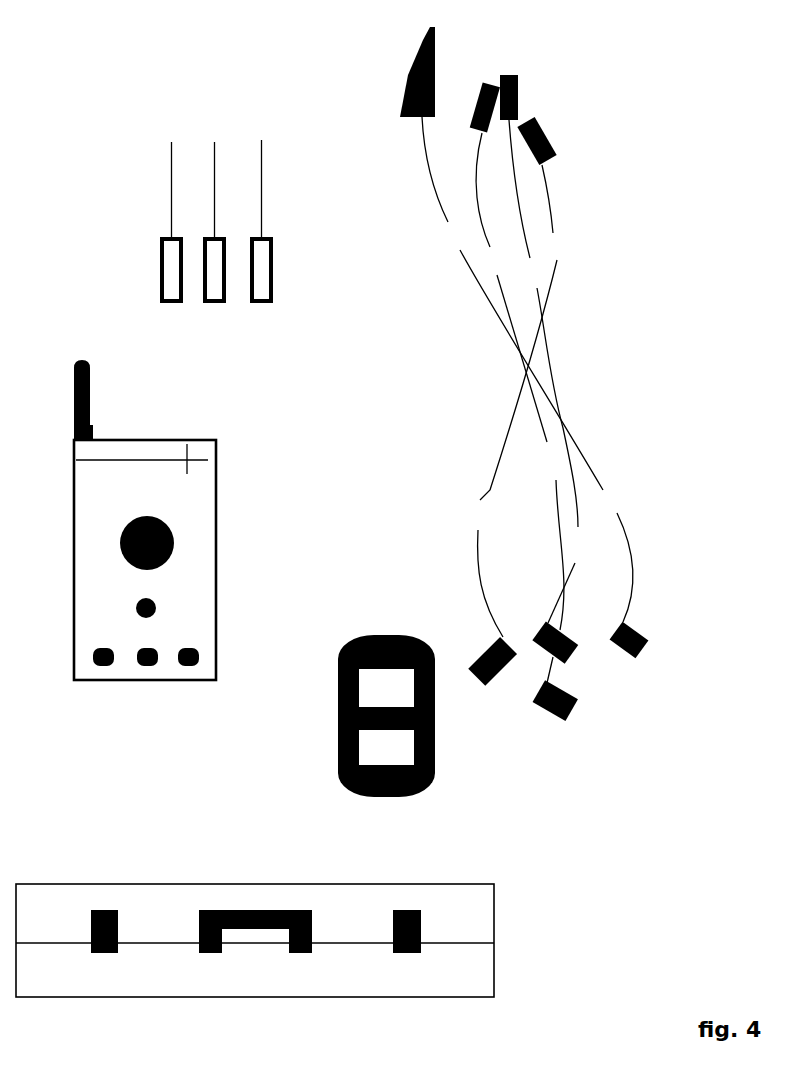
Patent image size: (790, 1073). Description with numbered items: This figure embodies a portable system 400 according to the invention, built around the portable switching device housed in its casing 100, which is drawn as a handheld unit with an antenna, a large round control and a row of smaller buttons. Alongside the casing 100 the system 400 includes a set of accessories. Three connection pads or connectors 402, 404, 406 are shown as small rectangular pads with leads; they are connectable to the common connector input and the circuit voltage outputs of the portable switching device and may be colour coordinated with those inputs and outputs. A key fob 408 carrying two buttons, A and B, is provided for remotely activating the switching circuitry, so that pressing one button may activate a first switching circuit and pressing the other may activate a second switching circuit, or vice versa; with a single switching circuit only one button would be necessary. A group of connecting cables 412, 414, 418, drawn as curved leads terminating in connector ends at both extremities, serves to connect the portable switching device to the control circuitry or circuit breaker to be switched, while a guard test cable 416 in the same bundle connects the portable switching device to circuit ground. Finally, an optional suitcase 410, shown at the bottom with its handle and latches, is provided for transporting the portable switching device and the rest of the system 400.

The portable system 400 is at (134, 190).
The connection pad or connector 402 is at (151, 221).
The connection pad or connector 404 is at (199, 221).
The connection pad or connector 406 is at (249, 220).
The casing 100 is at (205, 438).
The key fob 408 is at (354, 634).
The suitcase 410 is at (465, 884).
The connecting cable 412 is at (518, 401).
The connecting cable 414 is at (524, 372).
The guard test cable 416 is at (524, 342).
The connecting cable 418 is at (554, 398).